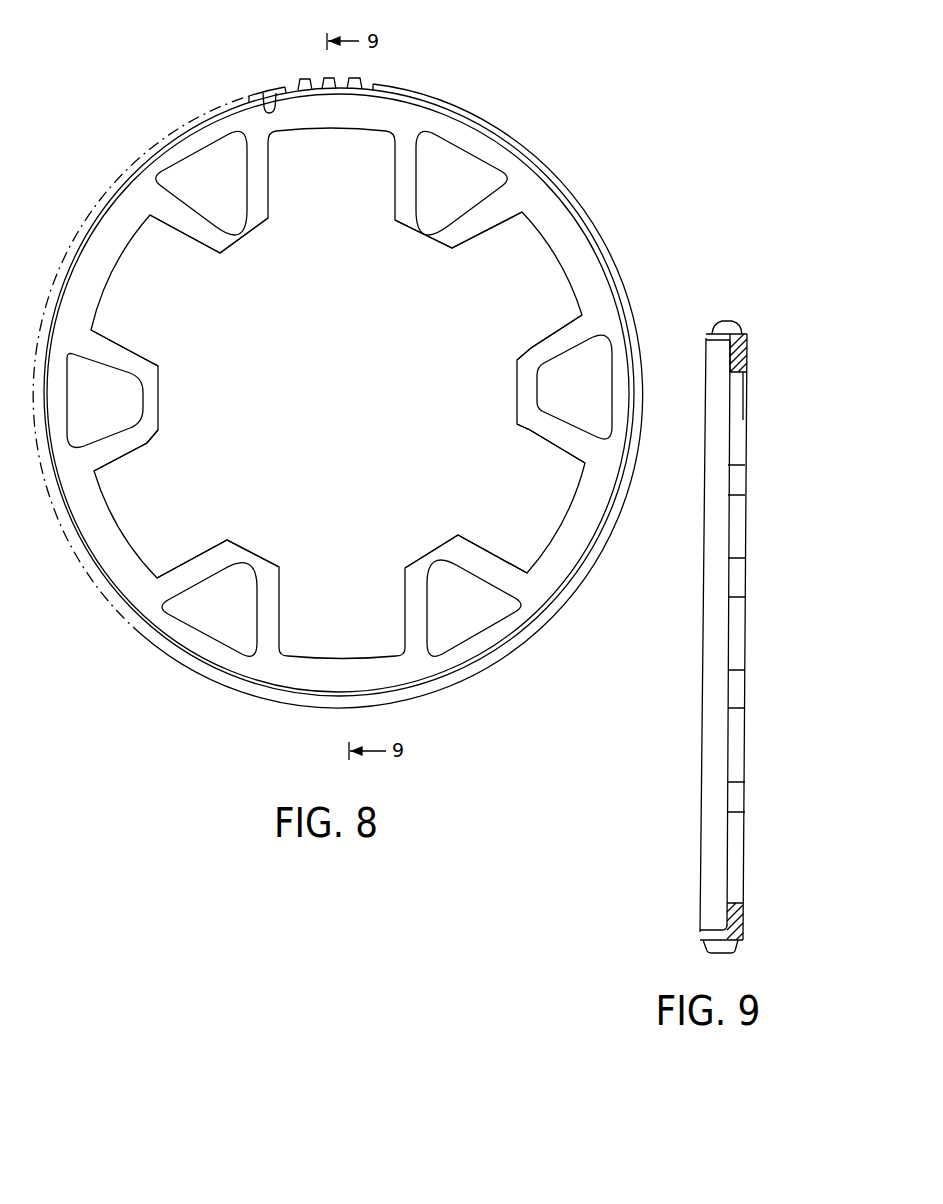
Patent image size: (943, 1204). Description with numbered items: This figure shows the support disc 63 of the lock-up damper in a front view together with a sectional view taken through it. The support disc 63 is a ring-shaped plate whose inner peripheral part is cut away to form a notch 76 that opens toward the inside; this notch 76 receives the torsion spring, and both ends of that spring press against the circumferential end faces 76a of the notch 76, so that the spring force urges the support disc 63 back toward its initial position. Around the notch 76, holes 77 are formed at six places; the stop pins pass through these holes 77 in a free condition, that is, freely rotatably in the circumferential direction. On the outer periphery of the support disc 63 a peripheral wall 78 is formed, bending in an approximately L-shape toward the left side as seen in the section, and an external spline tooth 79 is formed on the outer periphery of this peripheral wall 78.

In FIG. 8, the support disc 63 is at (566, 156).
In FIG. 9, the support disc 63 is at (688, 327).
In FIG. 8, the notch 76 is at (318, 186).
In FIG. 9, the notch 76 is at (742, 377).
In FIG. 8, the circumferential end faces 76a is at (212, 249).
In FIG. 9, the circumferential end faces 76a is at (742, 409).
In FIG. 8, the holes 77 is at (198, 188).
In FIG. 8, the peripheral wall 78 is at (262, 100).
In FIG. 9, the peripheral wall 78 is at (717, 347).
In FIG. 8, the external spline tooth 79 is at (303, 80).
In FIG. 9, the external spline tooth 79 is at (737, 322).